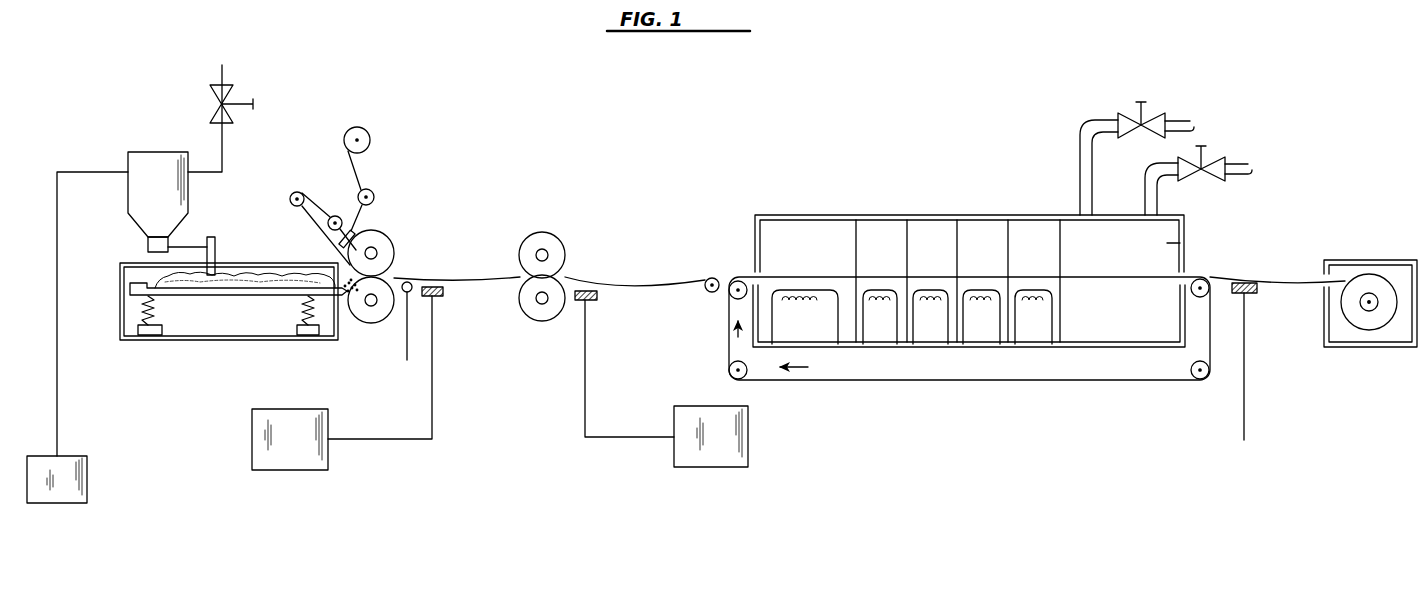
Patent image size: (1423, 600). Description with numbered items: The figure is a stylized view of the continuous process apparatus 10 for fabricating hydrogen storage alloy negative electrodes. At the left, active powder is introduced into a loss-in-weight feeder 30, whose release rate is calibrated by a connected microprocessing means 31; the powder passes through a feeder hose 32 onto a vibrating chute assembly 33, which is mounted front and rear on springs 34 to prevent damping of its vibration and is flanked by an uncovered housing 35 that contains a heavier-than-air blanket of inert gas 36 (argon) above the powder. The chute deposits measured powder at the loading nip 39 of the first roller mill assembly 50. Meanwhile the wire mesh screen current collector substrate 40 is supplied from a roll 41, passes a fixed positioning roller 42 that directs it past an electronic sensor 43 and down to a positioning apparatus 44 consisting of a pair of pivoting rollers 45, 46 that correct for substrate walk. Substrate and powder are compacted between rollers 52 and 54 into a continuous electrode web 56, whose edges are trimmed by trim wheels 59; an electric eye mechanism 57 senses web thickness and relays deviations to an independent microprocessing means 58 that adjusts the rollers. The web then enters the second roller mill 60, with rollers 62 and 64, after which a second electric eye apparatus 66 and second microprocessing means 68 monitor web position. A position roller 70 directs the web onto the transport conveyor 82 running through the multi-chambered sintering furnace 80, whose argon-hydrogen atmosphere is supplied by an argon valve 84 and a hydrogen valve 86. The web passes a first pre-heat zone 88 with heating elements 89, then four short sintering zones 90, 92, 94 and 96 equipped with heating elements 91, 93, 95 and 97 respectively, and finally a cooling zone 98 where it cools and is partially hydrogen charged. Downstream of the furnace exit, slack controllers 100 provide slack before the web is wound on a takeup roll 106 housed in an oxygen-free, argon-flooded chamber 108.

The continuous process apparatus 10 is at (1299, 107).
The loss-in-weight feeder 30 is at (150, 150).
The microprocessing means 31 is at (85, 491).
The feeder hose 32 is at (215, 245).
The vibrating chute assembly 33 is at (180, 296).
The springs 34 is at (144, 310).
The housing 35 is at (208, 340).
The blanket of inert gas 36 is at (180, 282).
The loading nip 39 is at (355, 293).
The wire mesh screen current collector substrate 40 is at (370, 176).
The roll 41 is at (363, 135).
The fixed positioning roller 42 is at (374, 195).
The electronic sensor 43 is at (372, 218).
The positioning apparatus 44 is at (316, 241).
The roller 45 is at (332, 217).
The roller 46 is at (291, 195).
The first roller mill assembly 50 is at (417, 277).
The roller 52 is at (396, 252).
The roller 54 is at (383, 312).
The electrode web 56 is at (433, 283).
The electric eye mechanism 57 is at (445, 296).
The independent microprocessing means 58 is at (298, 470).
The trim wheels 59 is at (407, 362).
The second roller mill 60 is at (567, 269).
The roller 62 is at (566, 247).
The roller 64 is at (556, 321).
The second electric eye apparatus 66 is at (600, 300).
The second microprocessing means 68 is at (737, 457).
The position roller 70 is at (706, 290).
The sintering furnace 80 is at (1012, 259).
The transport conveyor 82 is at (733, 330).
The argon valve 84 is at (1185, 125).
The hydrogen valve 86 is at (1242, 168).
The first pre-heat zone 88 is at (802, 235).
The heating elements 89 is at (778, 315).
The short sintering zone 90 is at (875, 237).
The heating elements 91 is at (865, 330).
The short sintering zone 92 is at (925, 235).
The heating elements 93 is at (915, 330).
The short sintering zone 94 is at (980, 235).
The heating elements 95 is at (960, 330).
The short sintering zone 96 is at (1035, 232).
The heating elements 97 is at (1025, 330).
The cooling zone 98 is at (1172, 243).
The slack controllers 100 is at (1248, 415).
The takeup roll 106 is at (1386, 329).
The chamber 108 is at (1370, 302).